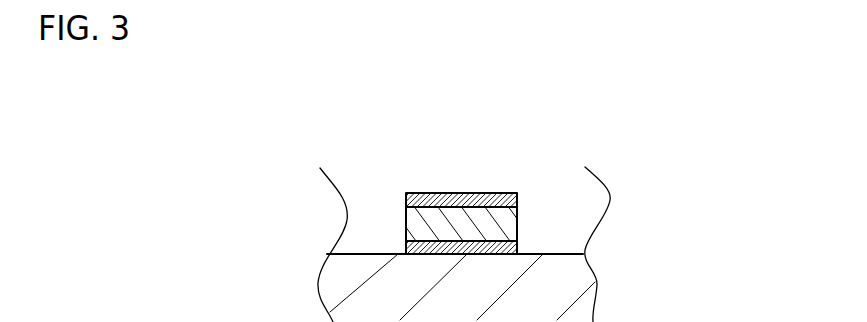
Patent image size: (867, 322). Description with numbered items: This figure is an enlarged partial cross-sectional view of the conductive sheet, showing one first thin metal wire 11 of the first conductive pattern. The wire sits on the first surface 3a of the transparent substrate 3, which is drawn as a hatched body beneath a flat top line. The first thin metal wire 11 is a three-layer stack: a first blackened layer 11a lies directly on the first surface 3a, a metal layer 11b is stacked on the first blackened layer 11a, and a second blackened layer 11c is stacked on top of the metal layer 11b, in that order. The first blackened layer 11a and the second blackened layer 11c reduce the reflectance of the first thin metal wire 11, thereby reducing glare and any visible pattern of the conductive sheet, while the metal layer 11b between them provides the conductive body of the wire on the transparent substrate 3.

The transparent substrate 3 is at (565, 285).
The first surface 3a is at (565, 252).
The first thin metal wire 11 is at (469, 186).
The first blackened layer 11a is at (508, 247).
The metal layer 11b is at (505, 222).
The second blackened layer 11c is at (497, 205).